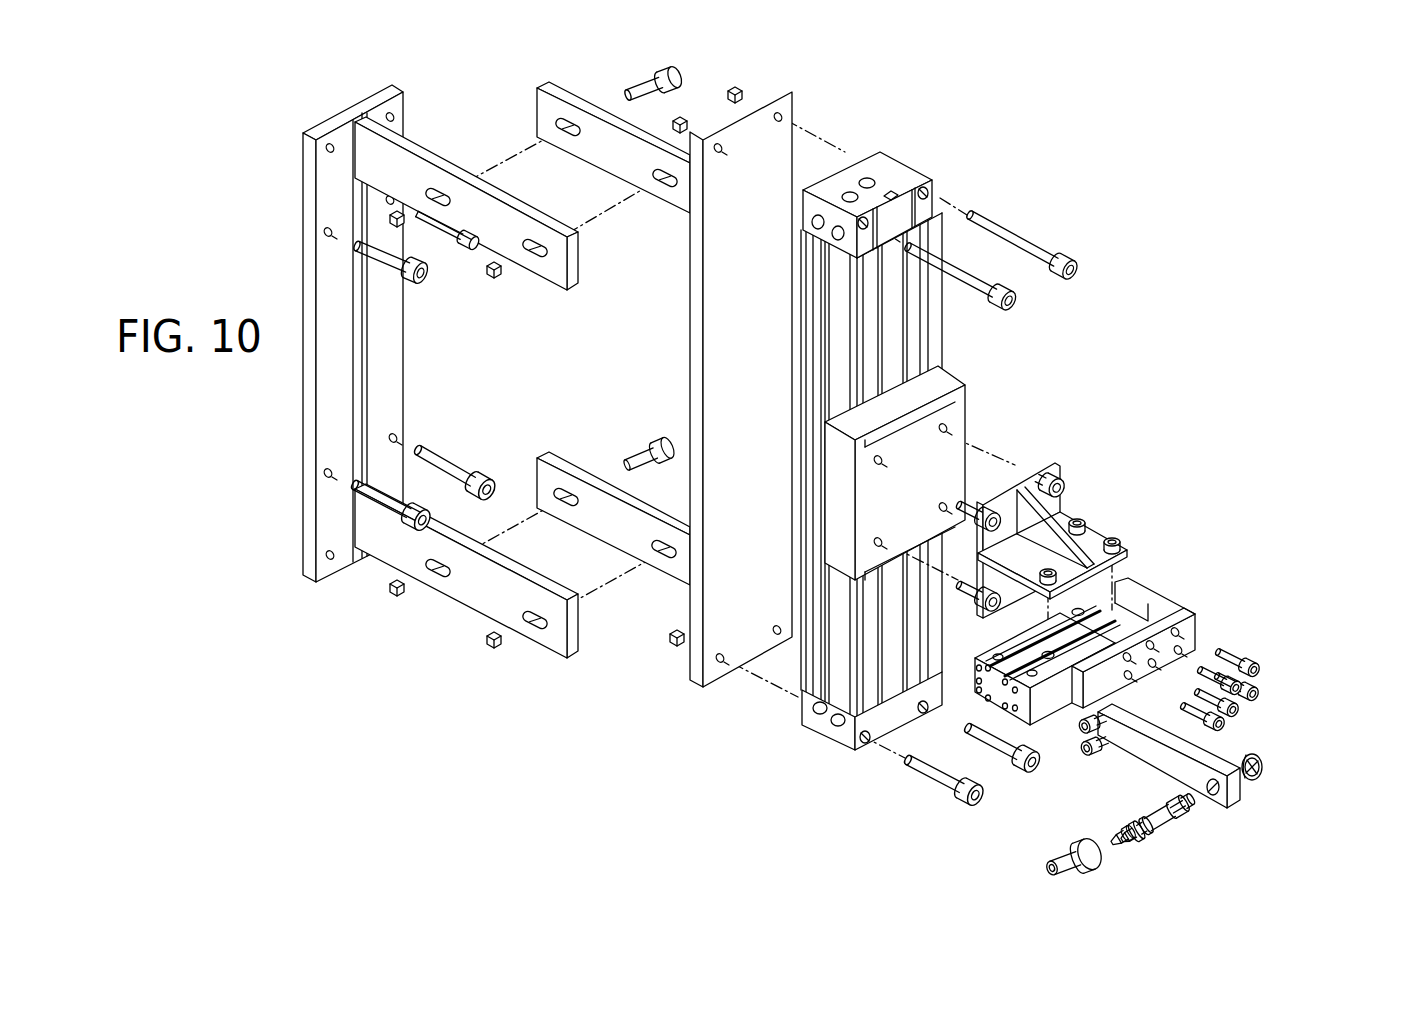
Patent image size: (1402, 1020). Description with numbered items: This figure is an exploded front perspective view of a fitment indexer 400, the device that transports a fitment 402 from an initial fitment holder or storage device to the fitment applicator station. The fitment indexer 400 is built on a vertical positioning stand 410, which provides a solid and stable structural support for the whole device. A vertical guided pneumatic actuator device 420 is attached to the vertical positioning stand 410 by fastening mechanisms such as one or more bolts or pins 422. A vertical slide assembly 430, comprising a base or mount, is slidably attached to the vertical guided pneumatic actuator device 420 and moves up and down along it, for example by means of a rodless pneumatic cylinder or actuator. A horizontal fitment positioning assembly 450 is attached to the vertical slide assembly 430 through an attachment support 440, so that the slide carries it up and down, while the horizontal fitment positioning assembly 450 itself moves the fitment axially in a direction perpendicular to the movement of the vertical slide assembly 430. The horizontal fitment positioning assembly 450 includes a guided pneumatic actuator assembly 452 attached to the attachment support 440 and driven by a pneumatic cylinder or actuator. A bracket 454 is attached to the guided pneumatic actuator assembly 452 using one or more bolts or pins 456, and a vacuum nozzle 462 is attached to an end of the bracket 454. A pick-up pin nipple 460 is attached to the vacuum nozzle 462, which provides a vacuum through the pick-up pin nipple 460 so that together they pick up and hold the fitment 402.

The fitment indexer 400 is at (1157, 375).
The fitment 402 is at (1073, 868).
The vertical positioning stand 410 is at (789, 85).
The vertical guided pneumatic actuator device 420 is at (908, 173).
The bolts or pins 422 is at (985, 280).
The vertical slide assembly 430 is at (970, 412).
The attachment support 440 is at (1096, 538).
The horizontal fitment positioning assembly 450 is at (1058, 884).
The guided pneumatic actuator assembly 452 is at (975, 699).
The bracket 454 is at (1223, 763).
The bolts or pins 456 is at (1272, 697).
The pick-up pin nipple 460 is at (1131, 840).
The vacuum nozzle 462 is at (1177, 828).